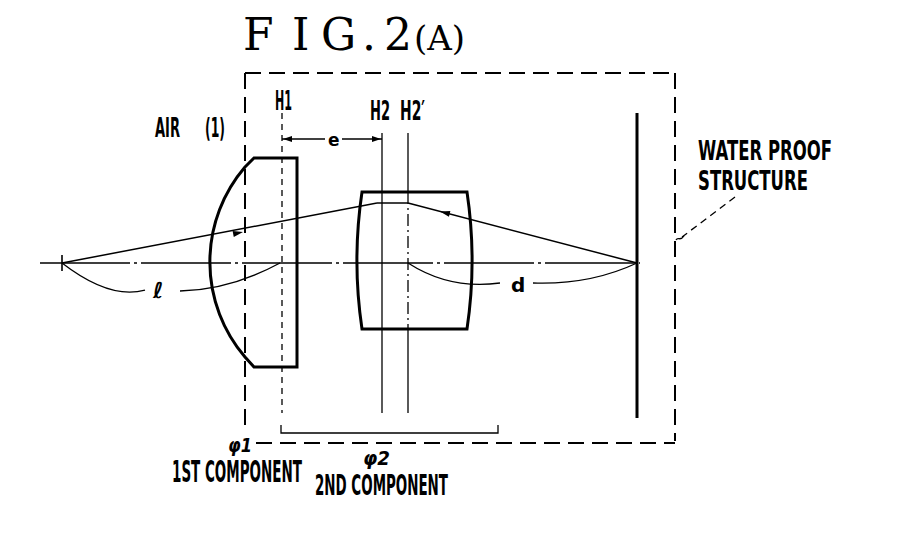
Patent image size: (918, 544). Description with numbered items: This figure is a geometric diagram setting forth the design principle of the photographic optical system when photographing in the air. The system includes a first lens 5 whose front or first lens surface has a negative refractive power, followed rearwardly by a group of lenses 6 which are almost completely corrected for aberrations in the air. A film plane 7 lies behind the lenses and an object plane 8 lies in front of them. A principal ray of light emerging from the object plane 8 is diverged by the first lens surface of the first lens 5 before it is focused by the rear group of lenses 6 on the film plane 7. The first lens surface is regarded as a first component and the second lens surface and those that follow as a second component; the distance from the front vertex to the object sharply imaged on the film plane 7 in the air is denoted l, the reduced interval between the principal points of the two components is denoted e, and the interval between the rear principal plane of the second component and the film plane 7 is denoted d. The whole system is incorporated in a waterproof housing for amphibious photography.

The first lens 5 is at (290, 333).
The group of lenses 6 is at (463, 313).
The film plane 7 is at (637, 343).
The object plane 8 is at (62, 266).